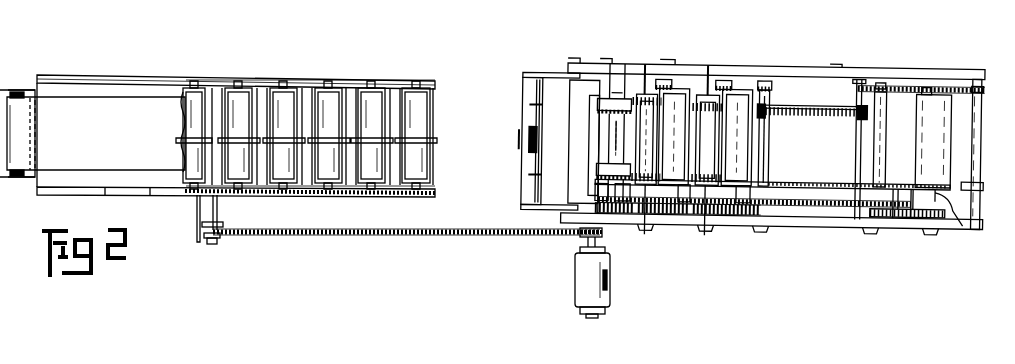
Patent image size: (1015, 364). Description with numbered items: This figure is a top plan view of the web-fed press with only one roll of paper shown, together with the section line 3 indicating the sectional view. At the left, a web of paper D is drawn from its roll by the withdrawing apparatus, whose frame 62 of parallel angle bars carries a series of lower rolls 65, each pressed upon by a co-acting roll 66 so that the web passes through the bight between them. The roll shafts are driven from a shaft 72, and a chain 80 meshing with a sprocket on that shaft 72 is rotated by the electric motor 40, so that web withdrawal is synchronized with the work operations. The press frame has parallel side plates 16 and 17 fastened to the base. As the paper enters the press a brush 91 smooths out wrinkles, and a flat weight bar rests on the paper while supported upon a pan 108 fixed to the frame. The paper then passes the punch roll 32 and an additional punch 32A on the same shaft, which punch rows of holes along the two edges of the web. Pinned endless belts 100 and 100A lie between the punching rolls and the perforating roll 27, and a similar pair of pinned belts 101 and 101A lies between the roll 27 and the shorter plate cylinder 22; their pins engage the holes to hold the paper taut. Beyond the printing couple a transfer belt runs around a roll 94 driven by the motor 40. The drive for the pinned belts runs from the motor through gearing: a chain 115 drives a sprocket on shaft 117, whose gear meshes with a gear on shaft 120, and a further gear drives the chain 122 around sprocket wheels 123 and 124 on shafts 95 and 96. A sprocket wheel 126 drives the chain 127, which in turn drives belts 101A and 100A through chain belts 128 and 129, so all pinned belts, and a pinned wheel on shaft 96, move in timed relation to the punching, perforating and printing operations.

The article being conveyed D is at (120, 103).
The frame 62 is at (307, 83).
The roll 65 is at (185, 95).
The co-acting roll 66 is at (190, 138).
The shaft 72 is at (219, 213).
The chain 80 is at (378, 234).
The electric motor 40 is at (578, 282).
The side plate 17 is at (812, 63).
The side plate 16 is at (835, 223).
The brush 91 is at (530, 135).
The pan 108 is at (573, 95).
The punch 32A is at (610, 100).
The punch roll 32 is at (602, 177).
The endless belt 100 is at (647, 177).
The endless belt 100A is at (645, 63).
The chain belt 129 is at (665, 79).
The perforating roll 27 is at (690, 93).
The endless belt 101 is at (707, 178).
The endless belt 101A is at (708, 103).
The chain belt 128 is at (725, 95).
The plate cylinder 22 is at (763, 87).
The sprocket wheel 126 is at (858, 103).
The chain 127 is at (795, 113).
The shaft 95 is at (857, 153).
The sprocket wheel 123 is at (858, 88).
The chain 122 is at (898, 82).
The sprocket wheel 124 is at (980, 80).
The shaft 96 is at (982, 115).
The roll 94 is at (948, 138).
The chain 115 is at (793, 203).
The shaft 117 is at (900, 212).
The shaft 120 is at (960, 222).
The section line 3- 3 is at (487, 187).